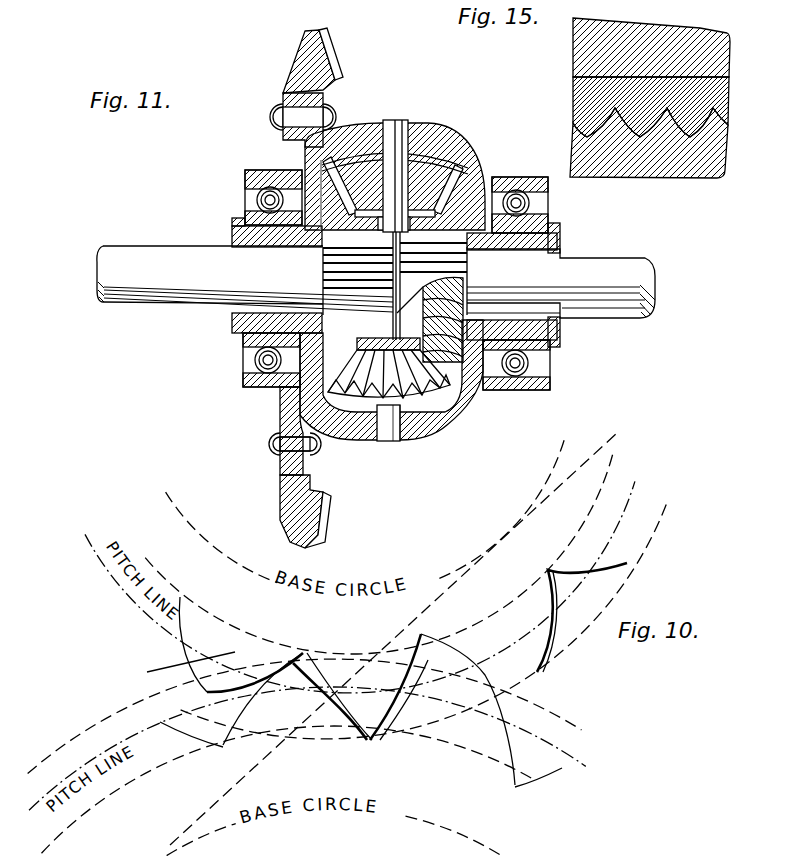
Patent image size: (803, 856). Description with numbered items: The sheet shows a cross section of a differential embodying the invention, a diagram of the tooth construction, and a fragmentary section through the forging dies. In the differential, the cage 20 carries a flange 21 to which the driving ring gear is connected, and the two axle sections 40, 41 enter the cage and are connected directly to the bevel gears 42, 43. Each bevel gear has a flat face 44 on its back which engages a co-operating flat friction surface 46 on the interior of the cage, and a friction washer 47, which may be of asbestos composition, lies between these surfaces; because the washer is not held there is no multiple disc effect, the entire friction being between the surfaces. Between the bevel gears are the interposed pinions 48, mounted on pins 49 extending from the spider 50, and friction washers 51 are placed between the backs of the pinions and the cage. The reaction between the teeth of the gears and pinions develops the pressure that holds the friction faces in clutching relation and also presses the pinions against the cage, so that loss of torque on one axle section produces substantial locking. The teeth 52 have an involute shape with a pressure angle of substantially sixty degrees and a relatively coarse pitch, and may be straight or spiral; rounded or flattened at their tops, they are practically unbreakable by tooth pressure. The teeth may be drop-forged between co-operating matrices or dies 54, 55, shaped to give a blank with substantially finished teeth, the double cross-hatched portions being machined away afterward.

In FIG. 11, the cage 20 is at (360, 130).
In FIG. 11, the flange 21 is at (340, 72).
In FIG. 11, the axle section 40 is at (145, 295).
In FIG. 11, the axle section 41 is at (613, 309).
In FIG. 11, the bevel gear 42 is at (245, 213).
In FIG. 11, the bevel gear 43 is at (462, 380).
In FIG. 11, the flat face 44 is at (287, 383).
In FIG. 11, the friction surface 46 is at (280, 389).
In FIG. 11, the friction washer 47 is at (243, 343).
In FIG. 11, the pinion 48 is at (450, 158).
In FIG. 11, the pin 49 is at (398, 128).
In FIG. 11, the spider 50 is at (380, 400).
In FIG. 11, the friction washer 51 is at (417, 400).
In FIG. 10, the teeth 52 is at (175, 667).
In FIG. 15, the matrix or die 54 is at (703, 14).
In FIG. 15, the matrix or die 55 is at (708, 180).